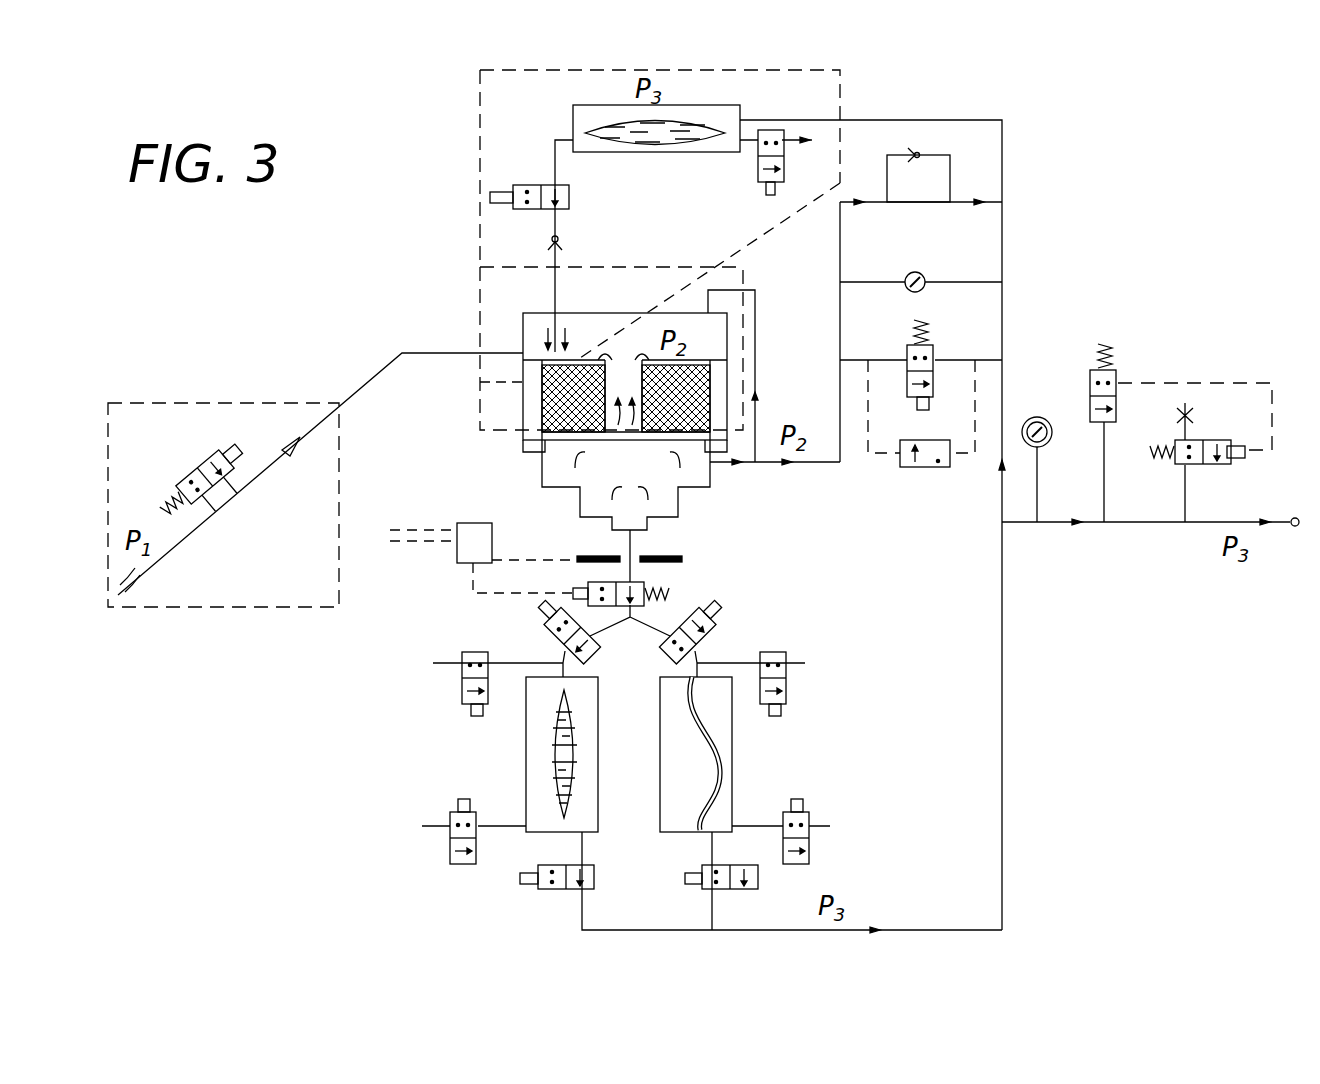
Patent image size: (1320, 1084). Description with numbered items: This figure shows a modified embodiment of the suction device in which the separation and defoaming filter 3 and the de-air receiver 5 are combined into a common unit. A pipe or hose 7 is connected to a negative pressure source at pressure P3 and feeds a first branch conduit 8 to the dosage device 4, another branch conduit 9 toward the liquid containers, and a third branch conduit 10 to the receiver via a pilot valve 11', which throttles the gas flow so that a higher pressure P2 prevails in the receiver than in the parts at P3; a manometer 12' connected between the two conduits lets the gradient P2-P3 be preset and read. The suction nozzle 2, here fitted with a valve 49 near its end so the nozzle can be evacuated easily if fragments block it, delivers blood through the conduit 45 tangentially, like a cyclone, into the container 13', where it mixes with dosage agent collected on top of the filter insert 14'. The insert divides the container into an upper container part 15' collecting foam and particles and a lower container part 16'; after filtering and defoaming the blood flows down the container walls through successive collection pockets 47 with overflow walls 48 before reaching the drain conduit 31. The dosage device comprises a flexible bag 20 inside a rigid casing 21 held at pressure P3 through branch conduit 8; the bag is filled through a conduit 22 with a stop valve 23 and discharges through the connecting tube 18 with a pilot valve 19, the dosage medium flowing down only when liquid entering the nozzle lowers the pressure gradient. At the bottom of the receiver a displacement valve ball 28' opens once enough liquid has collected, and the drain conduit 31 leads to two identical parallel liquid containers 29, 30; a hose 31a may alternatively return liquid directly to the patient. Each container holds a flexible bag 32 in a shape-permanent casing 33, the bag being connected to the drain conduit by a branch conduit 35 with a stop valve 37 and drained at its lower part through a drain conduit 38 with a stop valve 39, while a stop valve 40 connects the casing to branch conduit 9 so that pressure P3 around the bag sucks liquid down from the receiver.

The suction nozzle 2 is at (108, 515).
The separation and defoaming filter 3 is at (480, 318).
The dosage device 4 is at (480, 150).
The de-air receiver 5 is at (782, 727).
The pipe or hose 7 is at (1152, 527).
The first branch conduit 8 is at (915, 120).
The branch conduit 9 is at (1005, 655).
The third branch conduit 10 is at (757, 345).
The pilot valve 11' is at (949, 355).
The manometer 12' is at (921, 444).
The container 13' is at (625, 360).
The filter insert 14' is at (571, 398).
The upper container part 15' is at (680, 267).
The lower container part 16' is at (591, 511).
The connecting tube 18 is at (555, 150).
The pilot valve 19 is at (567, 197).
The flexible container or bag 20 is at (690, 108).
The rigid casing 21 is at (735, 105).
The conduit 22 is at (812, 142).
The stop valve 23 is at (758, 170).
The displacement valve ball 28' is at (579, 564).
The liquid container 29 is at (526, 745).
The liquid container 30 is at (732, 772).
The drain conduit 31 is at (642, 622).
The hose or conduit 31a is at (525, 660).
The flexible bag 32 is at (545, 770).
The shape-permanent casing 33 is at (600, 805).
The branch conduit 35 is at (700, 657).
The stop valve 37 is at (702, 622).
The drain conduit 38 is at (432, 828).
The stop valve 39 is at (462, 865).
The stop valve 40 is at (555, 893).
The conduit 45 is at (382, 370).
The collection pockets 47 is at (712, 478).
The overflow walls 48 is at (682, 482).
The valve 49 is at (185, 450).